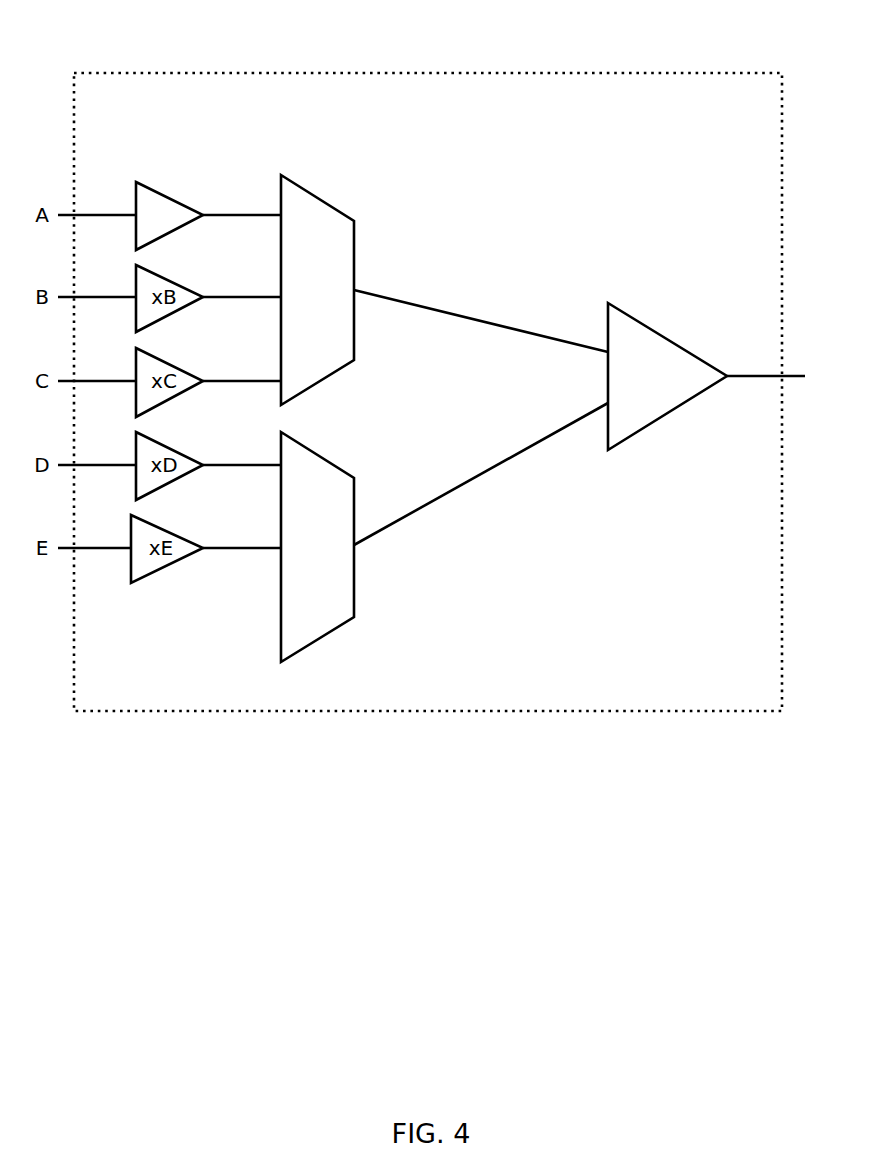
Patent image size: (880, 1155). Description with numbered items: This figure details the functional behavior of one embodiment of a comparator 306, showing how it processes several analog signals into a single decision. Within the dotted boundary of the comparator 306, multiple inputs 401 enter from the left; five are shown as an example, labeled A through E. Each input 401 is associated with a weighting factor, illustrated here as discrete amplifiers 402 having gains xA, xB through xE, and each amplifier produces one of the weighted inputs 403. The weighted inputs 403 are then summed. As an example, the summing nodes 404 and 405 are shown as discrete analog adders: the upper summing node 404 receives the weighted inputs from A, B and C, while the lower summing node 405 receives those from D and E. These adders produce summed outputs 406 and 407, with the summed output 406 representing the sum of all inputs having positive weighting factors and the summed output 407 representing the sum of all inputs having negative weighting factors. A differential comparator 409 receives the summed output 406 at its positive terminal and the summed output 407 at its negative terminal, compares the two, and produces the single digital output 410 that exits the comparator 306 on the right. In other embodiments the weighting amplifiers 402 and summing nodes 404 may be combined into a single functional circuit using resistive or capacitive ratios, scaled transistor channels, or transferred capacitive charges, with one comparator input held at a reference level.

The comparator 306 is at (430, 73).
The inputs 401 is at (93, 215).
The amplifiers 402 is at (182, 198).
The weighted inputs 403 is at (240, 215).
The summing node 404 is at (343, 212).
The summing node 405 is at (318, 640).
The summed output 406 is at (405, 300).
The summed output 407 is at (395, 520).
The differential comparator 409 is at (648, 323).
The digital output 410 is at (753, 373).